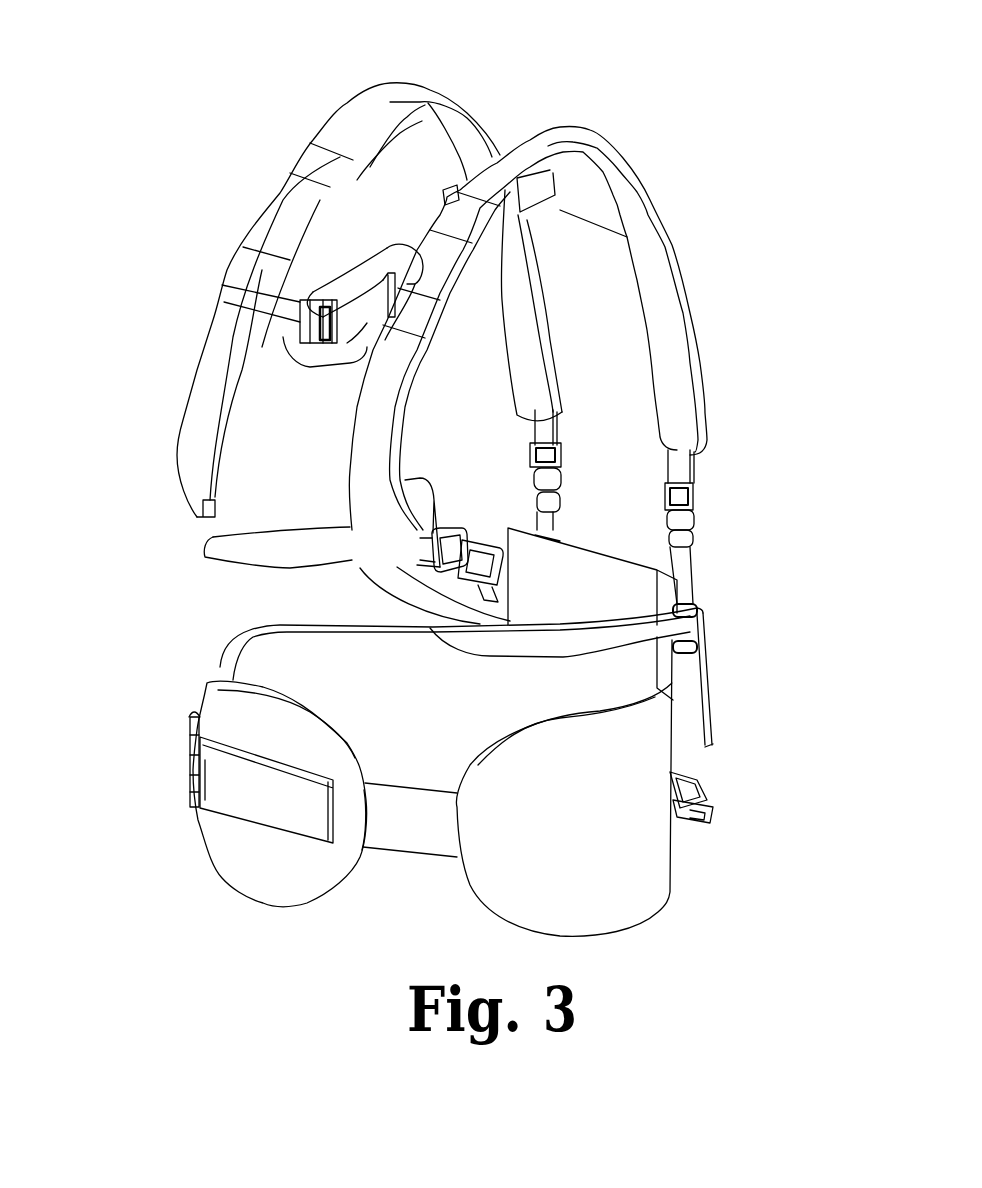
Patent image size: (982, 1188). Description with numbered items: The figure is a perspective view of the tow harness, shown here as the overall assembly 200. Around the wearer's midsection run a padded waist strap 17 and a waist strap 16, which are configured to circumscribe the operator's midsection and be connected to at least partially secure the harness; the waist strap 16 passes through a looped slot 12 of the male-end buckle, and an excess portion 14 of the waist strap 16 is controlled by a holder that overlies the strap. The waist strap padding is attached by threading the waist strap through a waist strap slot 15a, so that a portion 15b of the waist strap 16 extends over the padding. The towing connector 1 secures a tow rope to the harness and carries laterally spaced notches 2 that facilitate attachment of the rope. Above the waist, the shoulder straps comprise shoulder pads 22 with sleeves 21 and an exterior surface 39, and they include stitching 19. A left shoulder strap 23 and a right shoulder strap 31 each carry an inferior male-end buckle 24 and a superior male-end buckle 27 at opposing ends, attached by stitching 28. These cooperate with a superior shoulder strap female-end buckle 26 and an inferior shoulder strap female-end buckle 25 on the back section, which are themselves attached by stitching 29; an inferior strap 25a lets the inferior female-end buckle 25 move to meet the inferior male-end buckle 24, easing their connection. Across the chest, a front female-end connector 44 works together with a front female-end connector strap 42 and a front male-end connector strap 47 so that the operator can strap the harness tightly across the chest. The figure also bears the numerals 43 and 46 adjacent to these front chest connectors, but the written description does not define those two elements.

The towing connector 1 is at (693, 825).
The laterally spaced notches 2 is at (712, 803).
The looped slot 12 is at (197, 725).
The excess portion of the waist strap 14 is at (187, 797).
The waist strap slot 15a is at (337, 793).
The portion of the waist strap 15b is at (255, 793).
The waist strap 16 is at (407, 830).
The padded waist strap 17 is at (290, 667).
The stitching 19 is at (587, 903).
The sleeves 21 is at (250, 263).
The shoulder pads 22 is at (353, 188).
The left shoulder strap 23 is at (415, 478).
The inferior male-end buckle 24 is at (452, 527).
The inferior shoulder strap female-end buckle 25 is at (470, 553).
The inferior strap 25a is at (490, 568).
The superior shoulder strap female-end buckle 26 is at (562, 458).
The superior male-end buckle 27 is at (690, 512).
The stitching 28 is at (545, 432).
The stitching 29 is at (553, 523).
The right shoulder strap 31 is at (704, 643).
The exterior surface 39 is at (393, 103).
The front female-end connector strap 42 is at (397, 267).
The buckle frame 43 is at (318, 350).
The front female-end connector 44 is at (307, 323).
The strap loop 46 is at (297, 298).
The front male-end connector strap 47 is at (277, 323).
The harness 200 is at (218, 950).